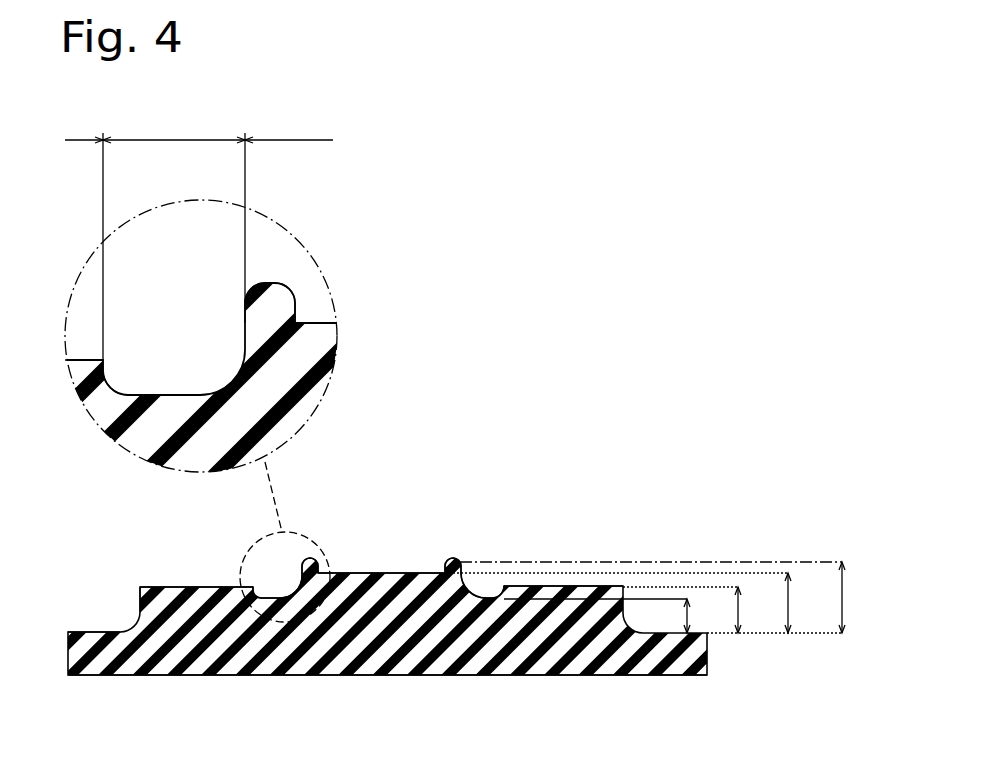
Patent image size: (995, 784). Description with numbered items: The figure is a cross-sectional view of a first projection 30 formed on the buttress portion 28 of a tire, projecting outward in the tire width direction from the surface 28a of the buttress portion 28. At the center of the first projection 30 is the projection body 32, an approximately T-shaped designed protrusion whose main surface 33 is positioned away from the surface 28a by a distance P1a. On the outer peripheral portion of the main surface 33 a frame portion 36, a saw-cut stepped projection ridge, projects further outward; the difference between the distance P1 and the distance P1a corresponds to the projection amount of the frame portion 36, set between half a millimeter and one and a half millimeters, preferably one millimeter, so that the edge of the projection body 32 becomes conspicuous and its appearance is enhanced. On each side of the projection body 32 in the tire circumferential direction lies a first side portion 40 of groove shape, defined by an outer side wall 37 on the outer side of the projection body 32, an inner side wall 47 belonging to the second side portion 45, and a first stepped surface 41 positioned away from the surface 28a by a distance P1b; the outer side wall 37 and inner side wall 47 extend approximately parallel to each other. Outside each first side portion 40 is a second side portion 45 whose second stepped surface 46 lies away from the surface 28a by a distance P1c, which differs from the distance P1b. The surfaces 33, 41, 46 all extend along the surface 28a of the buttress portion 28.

The buttress portion 28 is at (97, 676).
The surface of the buttress portion 28a is at (88, 632).
The first projection 30 is at (608, 490).
The projection body 32 is at (385, 692).
The main surface 33 is at (328, 320).
The frame portion 36 is at (280, 290).
The outer side wall 37 is at (243, 323).
The first side portion 40 is at (480, 697).
The first stepped surface 41 is at (157, 395).
The second side portion 45 is at (570, 700).
The second stepped surface 46 is at (85, 358).
The inner side wall 47 is at (108, 368).
The distance P1 is at (666, 597).
The distance P1a is at (637, 603).
The distance P1b is at (673, 616).
The distance P1c is at (701, 610).